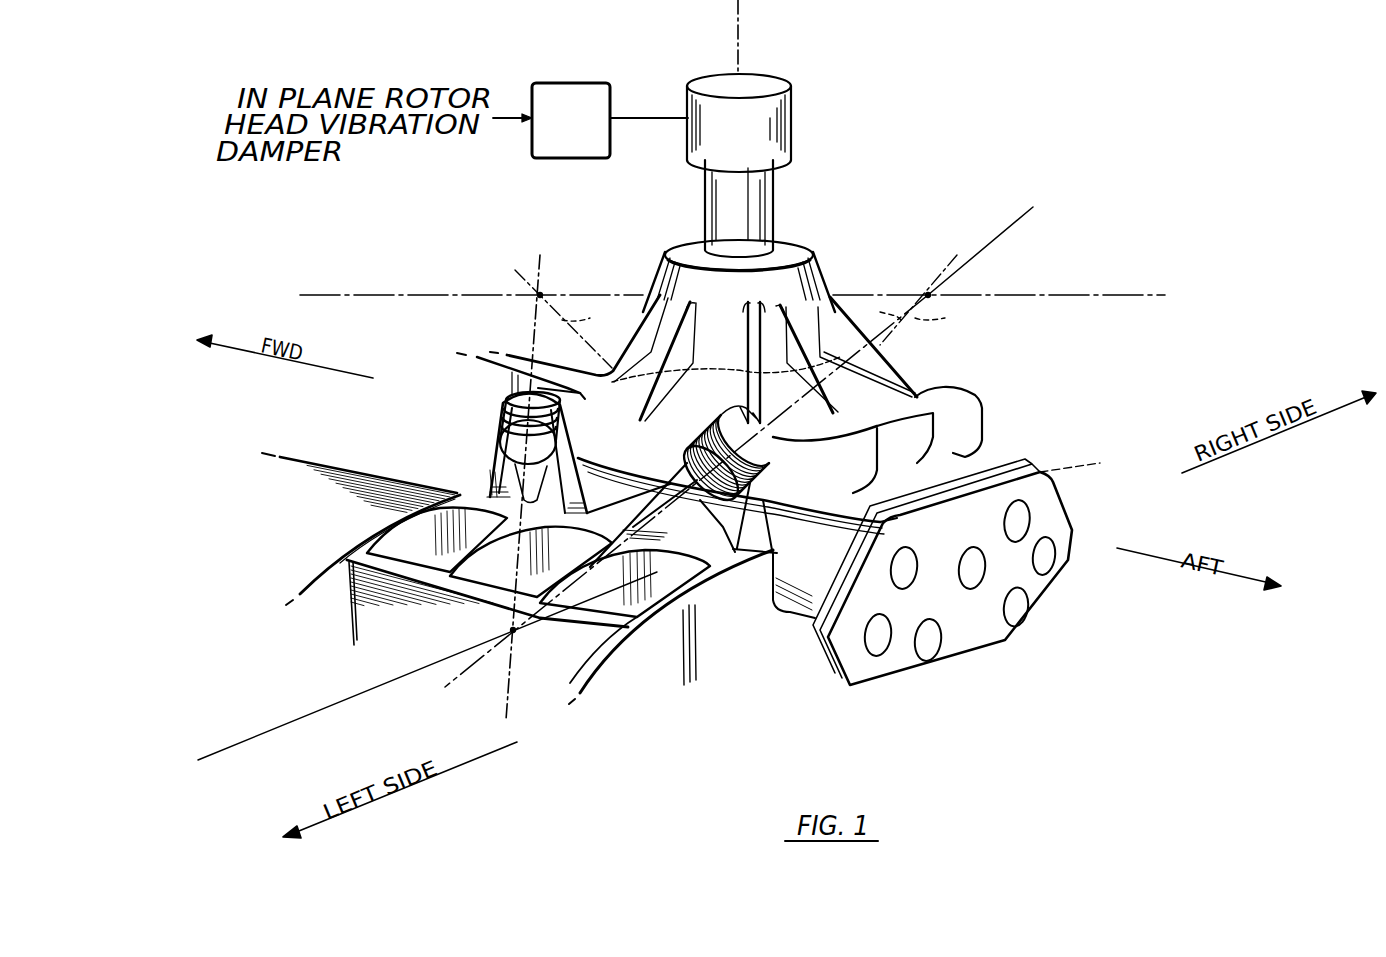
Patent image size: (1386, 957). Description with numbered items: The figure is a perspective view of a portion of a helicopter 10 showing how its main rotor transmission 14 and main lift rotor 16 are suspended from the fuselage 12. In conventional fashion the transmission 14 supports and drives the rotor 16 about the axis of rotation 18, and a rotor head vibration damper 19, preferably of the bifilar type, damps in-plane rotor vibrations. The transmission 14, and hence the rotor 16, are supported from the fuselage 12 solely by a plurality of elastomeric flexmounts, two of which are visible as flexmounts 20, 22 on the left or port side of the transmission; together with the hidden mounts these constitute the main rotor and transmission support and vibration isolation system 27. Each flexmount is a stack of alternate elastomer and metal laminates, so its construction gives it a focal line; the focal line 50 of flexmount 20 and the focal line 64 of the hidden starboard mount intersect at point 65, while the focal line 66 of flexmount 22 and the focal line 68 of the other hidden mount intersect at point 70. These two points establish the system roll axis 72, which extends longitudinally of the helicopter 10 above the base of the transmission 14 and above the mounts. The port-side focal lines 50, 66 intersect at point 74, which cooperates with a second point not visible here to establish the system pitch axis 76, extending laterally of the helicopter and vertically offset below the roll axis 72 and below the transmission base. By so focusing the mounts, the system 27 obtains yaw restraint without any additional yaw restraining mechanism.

The helicopter 10 is at (1095, 127).
The fuselage 12 is at (353, 473).
The main rotor transmission 14 is at (952, 396).
The main lift rotor 16 is at (770, 119).
The axis of rotation 18 is at (741, 15).
The rotor head vibration damper 19 is at (585, 129).
The flexmount 20 is at (515, 395).
The flexmount 22 is at (753, 455).
The main rotor and transmission support and vibration isolation system 27 is at (562, 398).
The focal line 50 is at (531, 316).
The focal line 64 is at (591, 317).
The point 65 is at (541, 294).
The focal line 66 is at (876, 315).
The focal line 68 is at (946, 319).
The point 70 is at (927, 292).
The system roll axis 72 is at (1027, 291).
The point 74 is at (517, 632).
The system pitch axis 76 is at (420, 668).